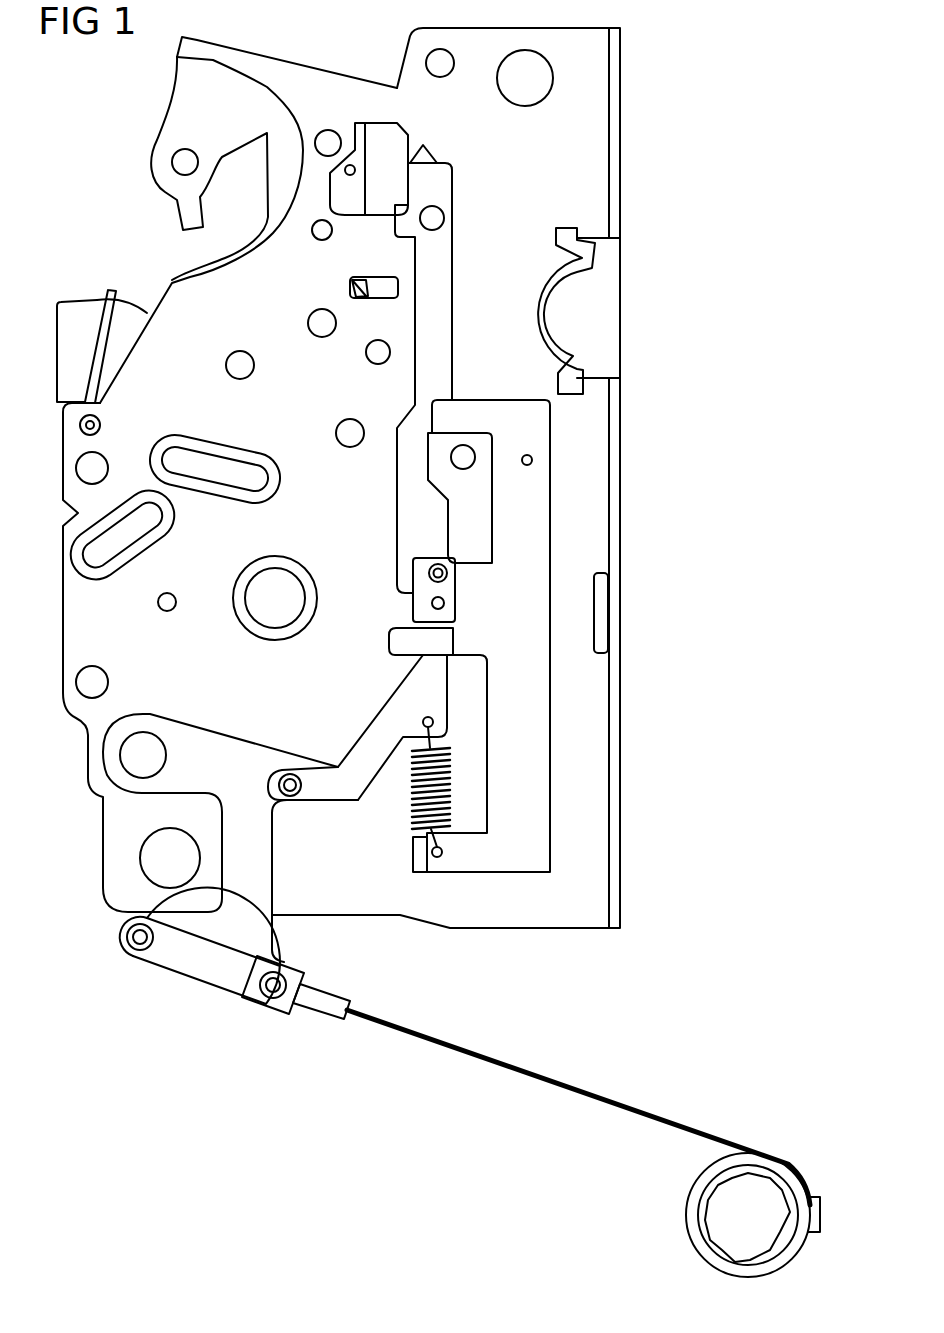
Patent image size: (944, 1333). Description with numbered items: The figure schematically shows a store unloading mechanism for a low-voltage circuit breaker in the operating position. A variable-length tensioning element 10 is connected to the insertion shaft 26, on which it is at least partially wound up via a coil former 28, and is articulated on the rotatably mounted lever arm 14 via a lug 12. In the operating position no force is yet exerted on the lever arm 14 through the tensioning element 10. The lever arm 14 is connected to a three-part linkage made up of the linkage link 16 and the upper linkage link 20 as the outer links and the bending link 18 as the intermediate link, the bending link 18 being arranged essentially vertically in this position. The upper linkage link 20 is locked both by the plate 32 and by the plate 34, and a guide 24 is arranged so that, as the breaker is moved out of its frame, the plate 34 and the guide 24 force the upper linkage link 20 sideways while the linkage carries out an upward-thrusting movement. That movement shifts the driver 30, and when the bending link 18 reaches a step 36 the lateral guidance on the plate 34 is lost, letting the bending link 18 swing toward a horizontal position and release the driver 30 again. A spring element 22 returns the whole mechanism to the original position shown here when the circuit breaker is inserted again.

The variable-length tensioning element 10 is at (560, 1080).
The lug 12 is at (213, 973).
The lever arm 14 is at (253, 883).
The linkage link 16 is at (378, 735).
The bending link 18 is at (413, 603).
The upper linkage link 20 is at (412, 487).
The spring element 22 is at (417, 803).
The guide 24 is at (433, 453).
The insertion shaft 26 is at (763, 1198).
The coil former 28 is at (687, 1208).
The driver 30 is at (350, 285).
The plate 32 is at (384, 137).
The plate 34 is at (507, 413).
The step 36 is at (470, 578).